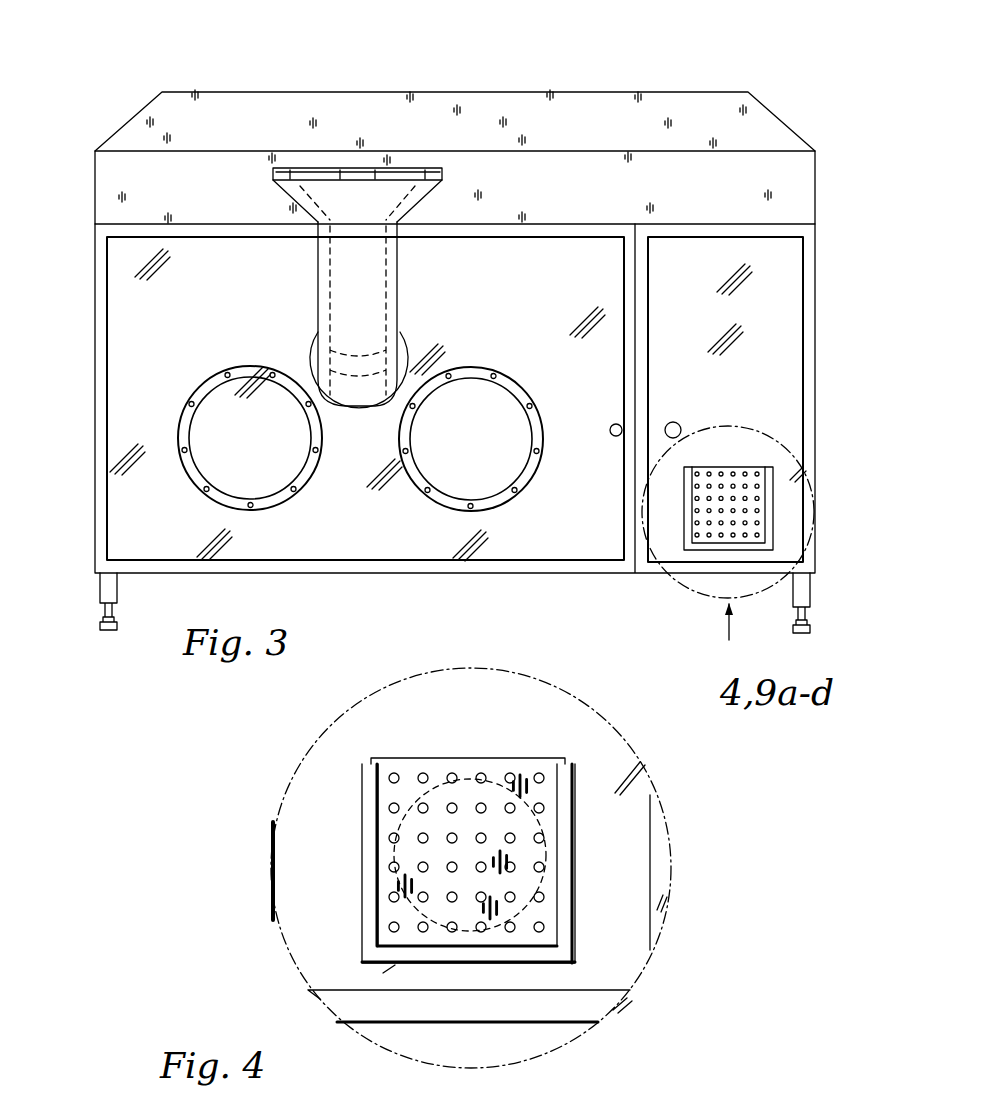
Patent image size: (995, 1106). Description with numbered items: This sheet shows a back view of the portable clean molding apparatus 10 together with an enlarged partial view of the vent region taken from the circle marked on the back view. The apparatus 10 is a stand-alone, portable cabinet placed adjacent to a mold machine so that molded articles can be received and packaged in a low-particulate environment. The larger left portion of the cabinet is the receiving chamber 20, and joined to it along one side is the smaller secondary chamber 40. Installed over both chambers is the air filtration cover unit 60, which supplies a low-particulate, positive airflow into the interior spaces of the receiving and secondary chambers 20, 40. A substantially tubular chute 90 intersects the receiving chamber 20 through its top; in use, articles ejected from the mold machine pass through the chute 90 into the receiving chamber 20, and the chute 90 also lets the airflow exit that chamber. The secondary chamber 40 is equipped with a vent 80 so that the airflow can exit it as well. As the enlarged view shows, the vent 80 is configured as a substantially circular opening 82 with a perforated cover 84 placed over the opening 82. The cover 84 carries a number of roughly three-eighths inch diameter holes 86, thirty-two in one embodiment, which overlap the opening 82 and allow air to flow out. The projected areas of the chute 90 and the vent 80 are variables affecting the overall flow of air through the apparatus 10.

In FIG. 3, the portable clean molding apparatus 10 is at (777, 52).
In FIG. 3, the receiving chamber 20 is at (82, 492).
In FIG. 3, the secondary chamber 40 is at (832, 389).
In FIG. 3, the air filtration cover unit 60 is at (90, 96).
In FIG. 3, the vent 80 is at (676, 530).
In FIG. 4, the vent 80 is at (391, 815).
In FIG. 4, the circular opening 82 is at (382, 792).
In FIG. 4, the perforated cover 84 is at (402, 758).
In FIG. 4, the holes 86 is at (452, 805).
In FIG. 3, the chute 90 is at (312, 287).